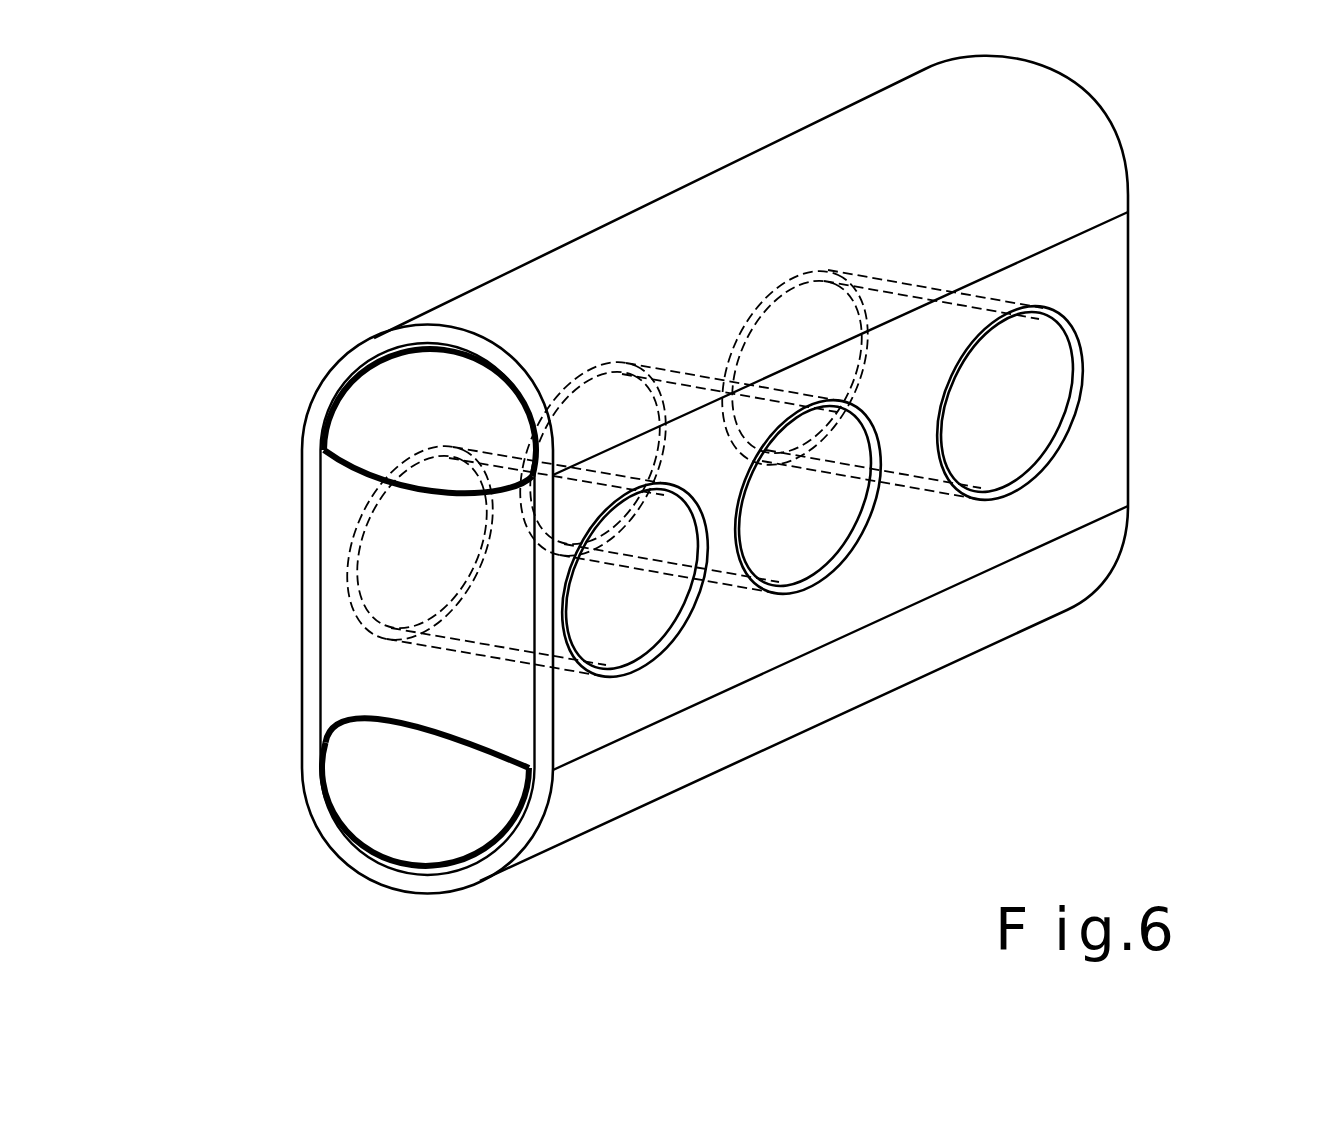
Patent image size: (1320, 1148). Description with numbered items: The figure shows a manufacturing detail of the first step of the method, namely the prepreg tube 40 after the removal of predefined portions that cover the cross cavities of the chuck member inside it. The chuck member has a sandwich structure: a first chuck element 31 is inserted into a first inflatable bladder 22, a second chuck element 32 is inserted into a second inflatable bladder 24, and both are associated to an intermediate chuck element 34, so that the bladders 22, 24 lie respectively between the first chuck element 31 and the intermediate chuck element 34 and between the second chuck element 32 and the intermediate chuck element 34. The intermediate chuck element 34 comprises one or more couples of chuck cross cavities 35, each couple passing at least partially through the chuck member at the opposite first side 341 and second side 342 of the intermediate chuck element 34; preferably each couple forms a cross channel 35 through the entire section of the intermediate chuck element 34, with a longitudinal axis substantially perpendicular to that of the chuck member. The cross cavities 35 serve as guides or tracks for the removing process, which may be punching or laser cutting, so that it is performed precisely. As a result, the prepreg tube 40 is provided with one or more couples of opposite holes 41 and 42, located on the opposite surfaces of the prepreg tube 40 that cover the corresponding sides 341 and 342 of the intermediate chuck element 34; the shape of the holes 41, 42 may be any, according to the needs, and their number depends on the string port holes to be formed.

The first inflatable bladder 22 is at (362, 470).
The second inflatable bladder 24 is at (323, 736).
The first chuck element 31 is at (400, 412).
The second chuck element 32 is at (403, 800).
The intermediate chuck element 34 is at (353, 638).
The first side 341 is at (575, 723).
The second side 342 is at (297, 552).
The chuck cross cavities 35 is at (1022, 420).
The prepreg tube 40 is at (624, 475).
The opposite hole 41 is at (1033, 390).
The opposite hole 42 is at (790, 325).